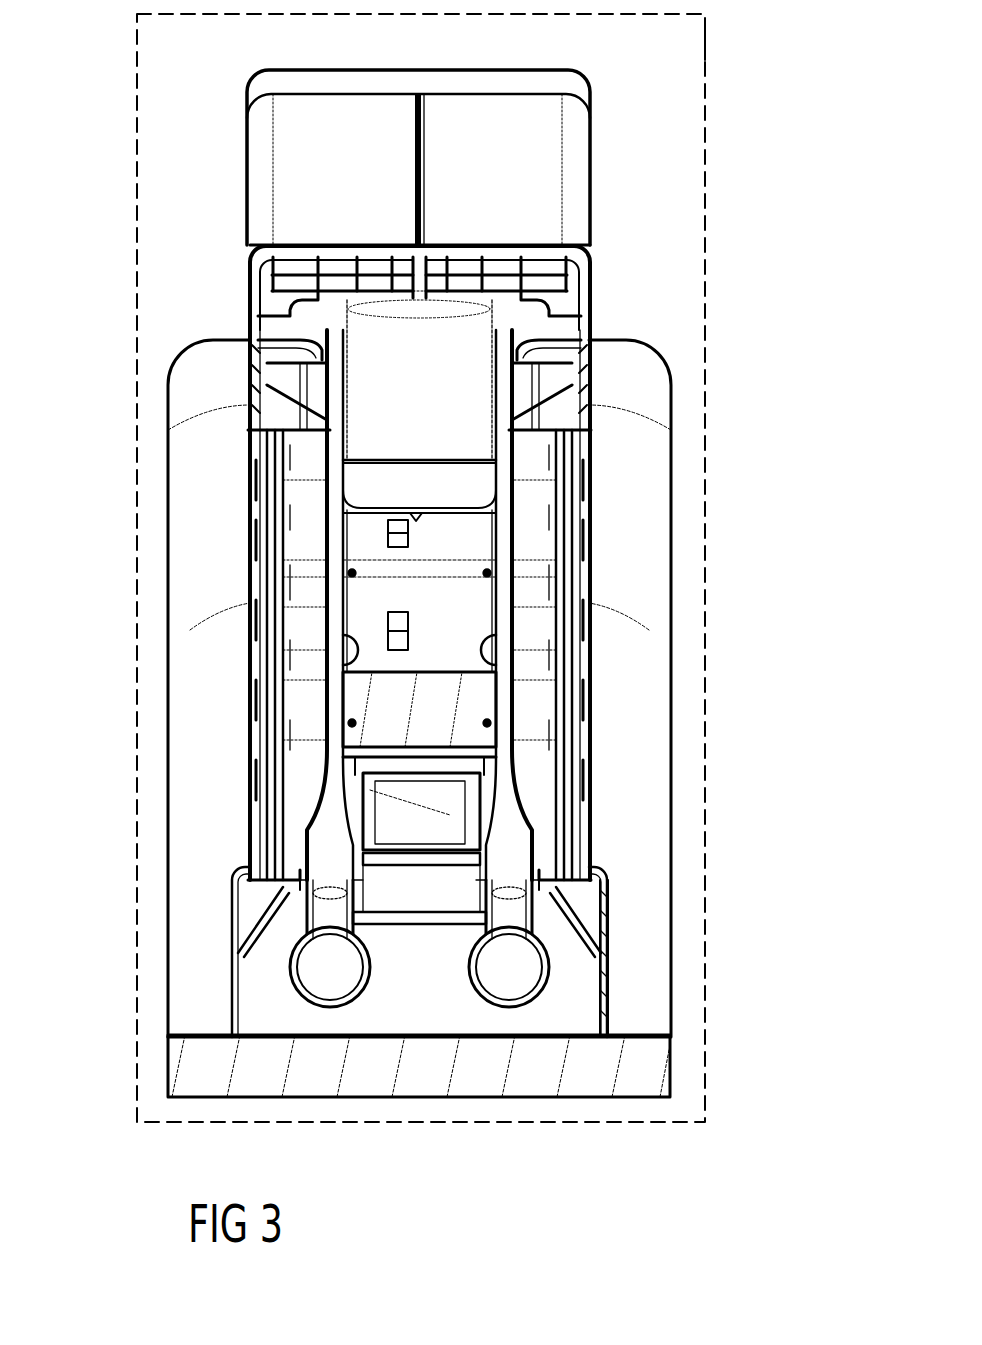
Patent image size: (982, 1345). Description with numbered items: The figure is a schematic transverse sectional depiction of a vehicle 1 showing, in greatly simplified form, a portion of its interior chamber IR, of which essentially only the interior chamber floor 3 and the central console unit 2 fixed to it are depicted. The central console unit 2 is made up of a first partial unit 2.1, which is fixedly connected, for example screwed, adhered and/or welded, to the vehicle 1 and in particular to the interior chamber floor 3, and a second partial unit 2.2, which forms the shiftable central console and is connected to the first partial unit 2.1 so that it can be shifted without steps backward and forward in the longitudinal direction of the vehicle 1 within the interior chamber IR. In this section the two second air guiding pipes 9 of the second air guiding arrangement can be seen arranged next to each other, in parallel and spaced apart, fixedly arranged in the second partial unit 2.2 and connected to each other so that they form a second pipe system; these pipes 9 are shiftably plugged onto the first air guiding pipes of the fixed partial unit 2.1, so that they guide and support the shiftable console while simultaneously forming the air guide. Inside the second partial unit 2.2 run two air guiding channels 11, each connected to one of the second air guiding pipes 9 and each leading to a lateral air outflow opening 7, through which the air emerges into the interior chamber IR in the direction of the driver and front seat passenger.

The vehicle 1 is at (706, 293).
The interior chamber IR is at (682, 52).
The central console unit 2 is at (430, 553).
The first partial unit 2.1 is at (610, 960).
The second partial unit 2.2 is at (570, 173).
The interior chamber floor 3 is at (180, 1077).
The air outflow opening 7 is at (245, 405).
The second air guiding pipe 9 is at (305, 967).
The air guiding channel 11 is at (300, 600).